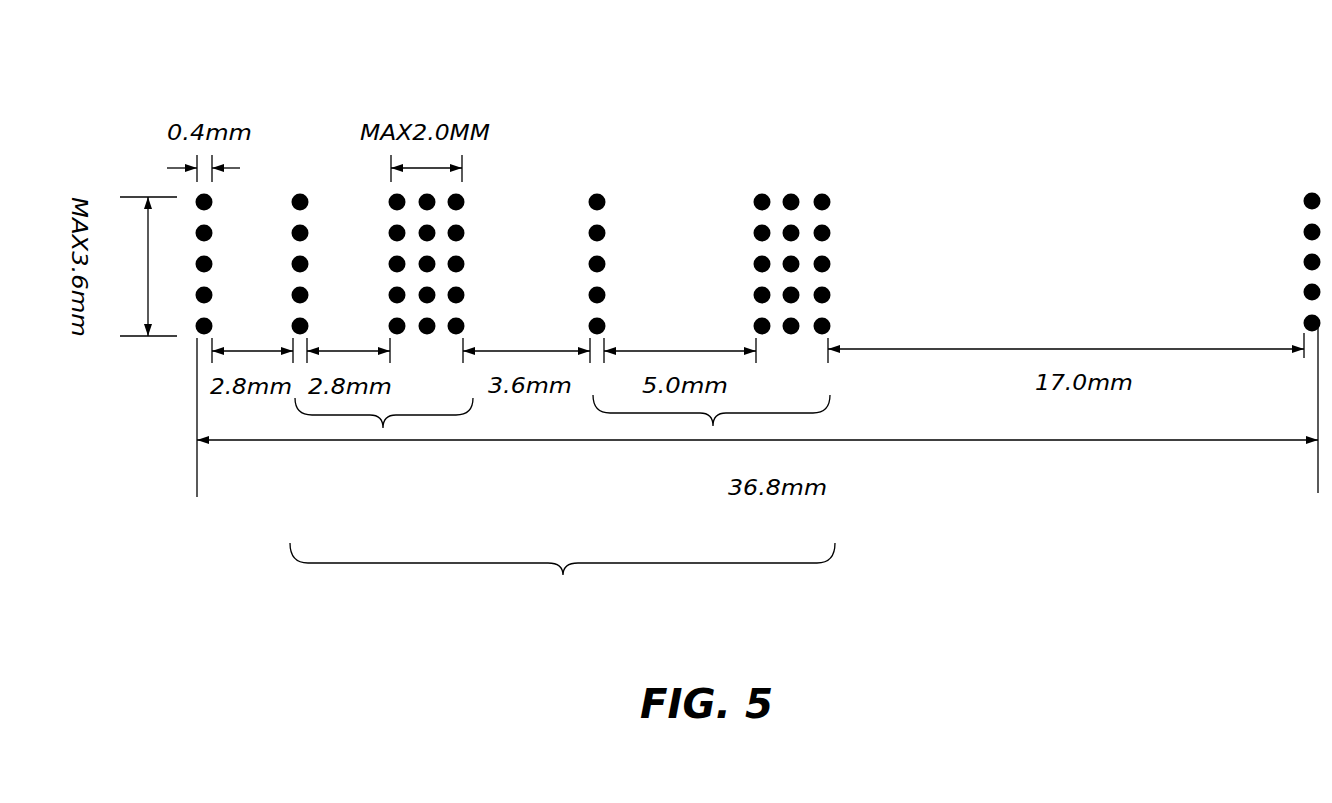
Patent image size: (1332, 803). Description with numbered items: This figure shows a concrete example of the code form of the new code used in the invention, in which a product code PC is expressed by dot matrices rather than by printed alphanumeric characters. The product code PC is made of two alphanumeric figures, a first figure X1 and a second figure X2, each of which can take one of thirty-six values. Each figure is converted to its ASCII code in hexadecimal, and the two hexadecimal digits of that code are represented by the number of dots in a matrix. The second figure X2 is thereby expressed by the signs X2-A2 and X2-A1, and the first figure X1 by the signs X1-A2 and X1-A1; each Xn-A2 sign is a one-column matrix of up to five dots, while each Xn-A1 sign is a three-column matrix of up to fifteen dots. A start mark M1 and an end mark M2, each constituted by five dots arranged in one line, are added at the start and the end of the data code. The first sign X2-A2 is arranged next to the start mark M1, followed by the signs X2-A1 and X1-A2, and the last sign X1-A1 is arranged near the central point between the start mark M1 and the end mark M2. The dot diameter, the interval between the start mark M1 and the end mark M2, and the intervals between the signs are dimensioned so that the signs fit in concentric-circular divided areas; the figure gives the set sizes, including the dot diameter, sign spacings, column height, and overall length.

The start mark M1 is at (215, 95).
The end mark M2 is at (1297, 180).
The first sign of data code X2-A2 is at (317, 95).
The second sign of data code X2-A1 is at (440, 95).
The third sign of data code X1-A2 is at (608, 95).
The last sign of data code X1-A1 is at (782, 95).
The second figure of product code X2 is at (383, 428).
The first figure of product code X1 is at (713, 426).
The product code PC is at (563, 575).